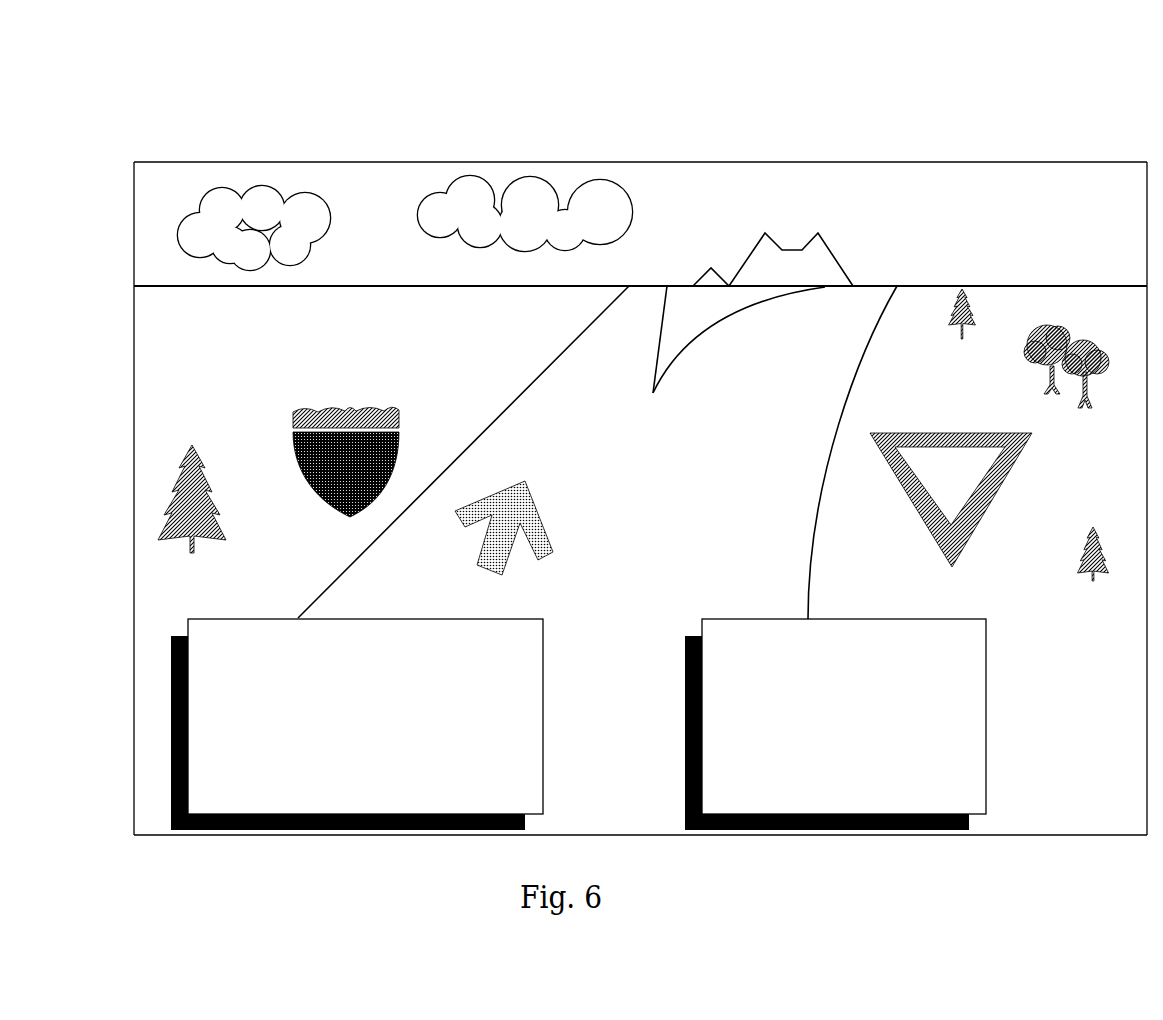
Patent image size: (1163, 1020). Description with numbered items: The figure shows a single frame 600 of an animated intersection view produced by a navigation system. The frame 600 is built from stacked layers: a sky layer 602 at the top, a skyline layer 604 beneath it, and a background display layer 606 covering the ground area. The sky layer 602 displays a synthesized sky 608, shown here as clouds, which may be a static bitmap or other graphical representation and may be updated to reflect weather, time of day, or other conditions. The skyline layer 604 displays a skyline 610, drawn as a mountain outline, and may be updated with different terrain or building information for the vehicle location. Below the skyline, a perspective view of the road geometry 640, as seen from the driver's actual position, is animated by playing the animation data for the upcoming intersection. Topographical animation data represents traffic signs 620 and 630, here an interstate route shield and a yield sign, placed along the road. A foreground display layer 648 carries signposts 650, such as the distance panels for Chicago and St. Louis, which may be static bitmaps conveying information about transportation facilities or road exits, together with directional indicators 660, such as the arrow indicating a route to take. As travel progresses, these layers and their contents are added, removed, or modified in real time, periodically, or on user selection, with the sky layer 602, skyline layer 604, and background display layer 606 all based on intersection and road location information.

The frame 600 is at (950, 109).
The sky layer 602 is at (1137, 192).
The skyline layer 604 is at (1057, 286).
The background display layer 606 is at (1137, 316).
The synthesized sky 608 is at (382, 180).
The skyline 610 is at (832, 250).
The traffic sign 620 is at (312, 427).
The traffic sign 630 is at (985, 500).
The road geometry 640 is at (632, 351).
The foreground display layer 648 is at (170, 831).
The signpost 650 is at (986, 716).
The directional indicator 660 is at (495, 493).